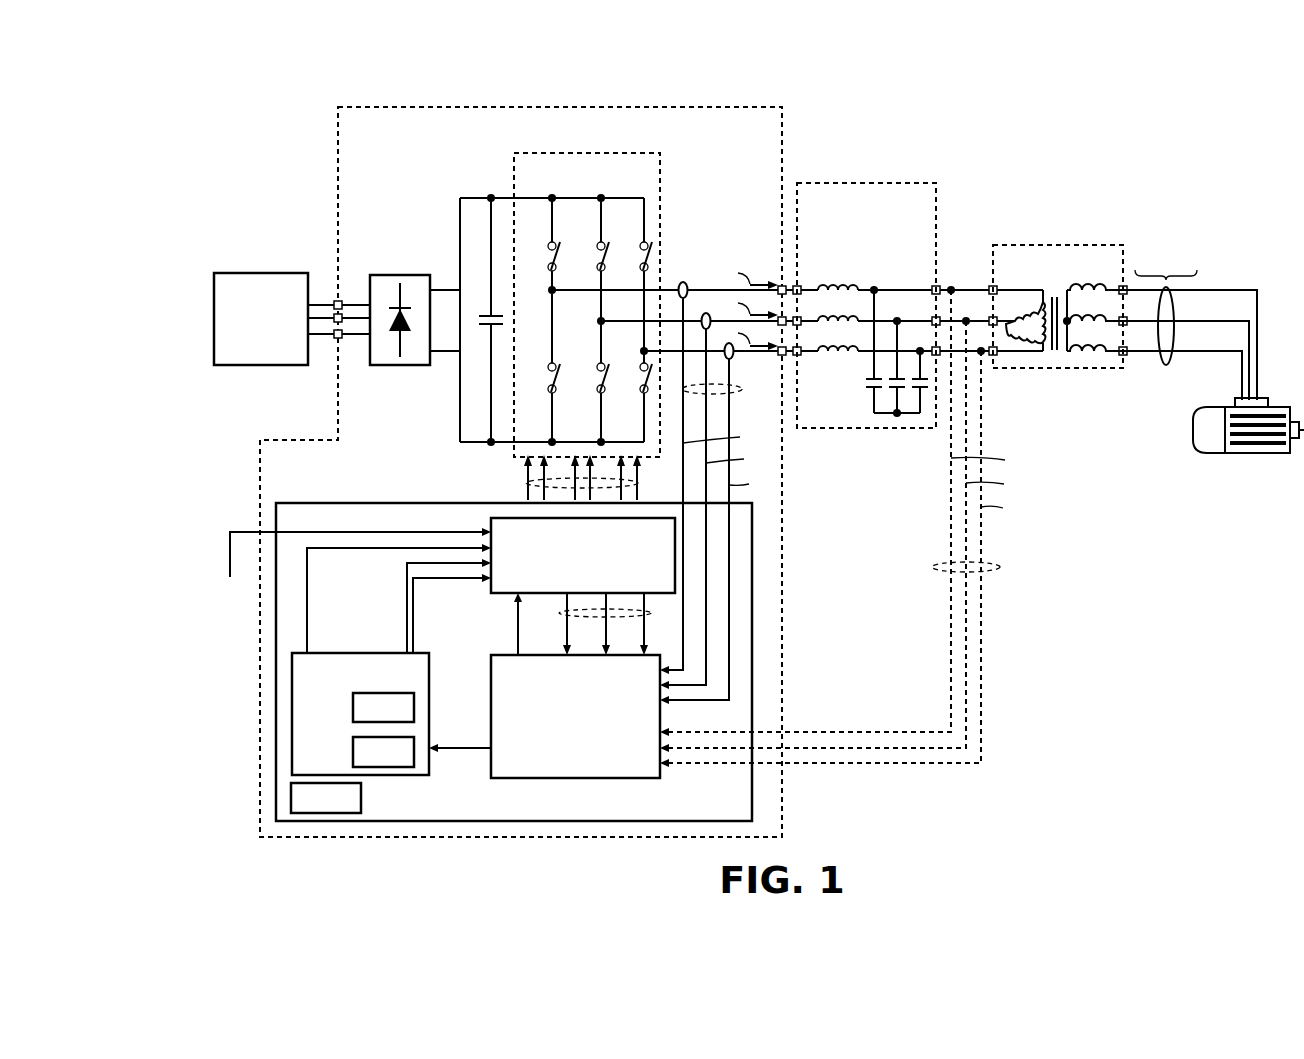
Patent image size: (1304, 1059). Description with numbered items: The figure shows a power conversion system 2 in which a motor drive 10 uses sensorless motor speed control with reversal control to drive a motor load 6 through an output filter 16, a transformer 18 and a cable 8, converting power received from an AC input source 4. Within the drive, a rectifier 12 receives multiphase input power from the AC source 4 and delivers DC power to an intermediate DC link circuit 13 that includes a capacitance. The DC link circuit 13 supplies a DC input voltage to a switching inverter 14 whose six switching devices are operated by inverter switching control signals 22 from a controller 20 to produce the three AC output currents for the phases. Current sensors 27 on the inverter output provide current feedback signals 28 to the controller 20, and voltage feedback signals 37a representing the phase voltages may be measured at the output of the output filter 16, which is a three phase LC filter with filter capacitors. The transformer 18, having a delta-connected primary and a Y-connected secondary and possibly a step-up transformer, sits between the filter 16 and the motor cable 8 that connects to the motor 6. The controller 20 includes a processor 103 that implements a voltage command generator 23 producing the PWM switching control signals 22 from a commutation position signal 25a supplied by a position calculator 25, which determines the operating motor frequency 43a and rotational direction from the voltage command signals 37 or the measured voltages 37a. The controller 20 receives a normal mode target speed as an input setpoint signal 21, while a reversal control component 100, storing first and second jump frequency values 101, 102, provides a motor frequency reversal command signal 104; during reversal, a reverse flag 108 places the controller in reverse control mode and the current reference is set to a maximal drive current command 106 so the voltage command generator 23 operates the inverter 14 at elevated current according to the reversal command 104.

The power conversion system 2 is at (268, 94).
The motor drive 10 is at (368, 104).
The AC input source 4 is at (260, 273).
The rectifier 12 is at (401, 276).
The intermediate DC link circuit 13 is at (466, 160).
The switching inverter 14 is at (587, 149).
The output filter 16 is at (869, 183).
The transformer 18 is at (1064, 245).
The cable 8 is at (1159, 373).
The motor load 6 is at (1193, 432).
The current sensors 27 is at (712, 275).
The inverter output current feedback signals 28 is at (740, 389).
The inverter switching control signals 22 is at (526, 485).
The controller 20 is at (325, 503).
The input setpoint signal 21 is at (250, 520).
The voltage command generator 23 is at (491, 520).
The position calculator 25 is at (501, 654).
The commutation position signal 25a is at (514, 622).
The voltage command signals 37 is at (648, 613).
The voltage feedback signals 37a is at (996, 567).
The reversal control component 100 is at (352, 654).
The first jump frequency value 101 is at (352, 710).
The second jump frequency value 102 is at (352, 755).
The processor 103 is at (361, 798).
The motor frequency reversal command signal 104 is at (307, 591).
The maximal drive current command signal 106 is at (407, 600).
The reverse flag 108 is at (413, 618).
The operating motor frequency 43a is at (450, 741).